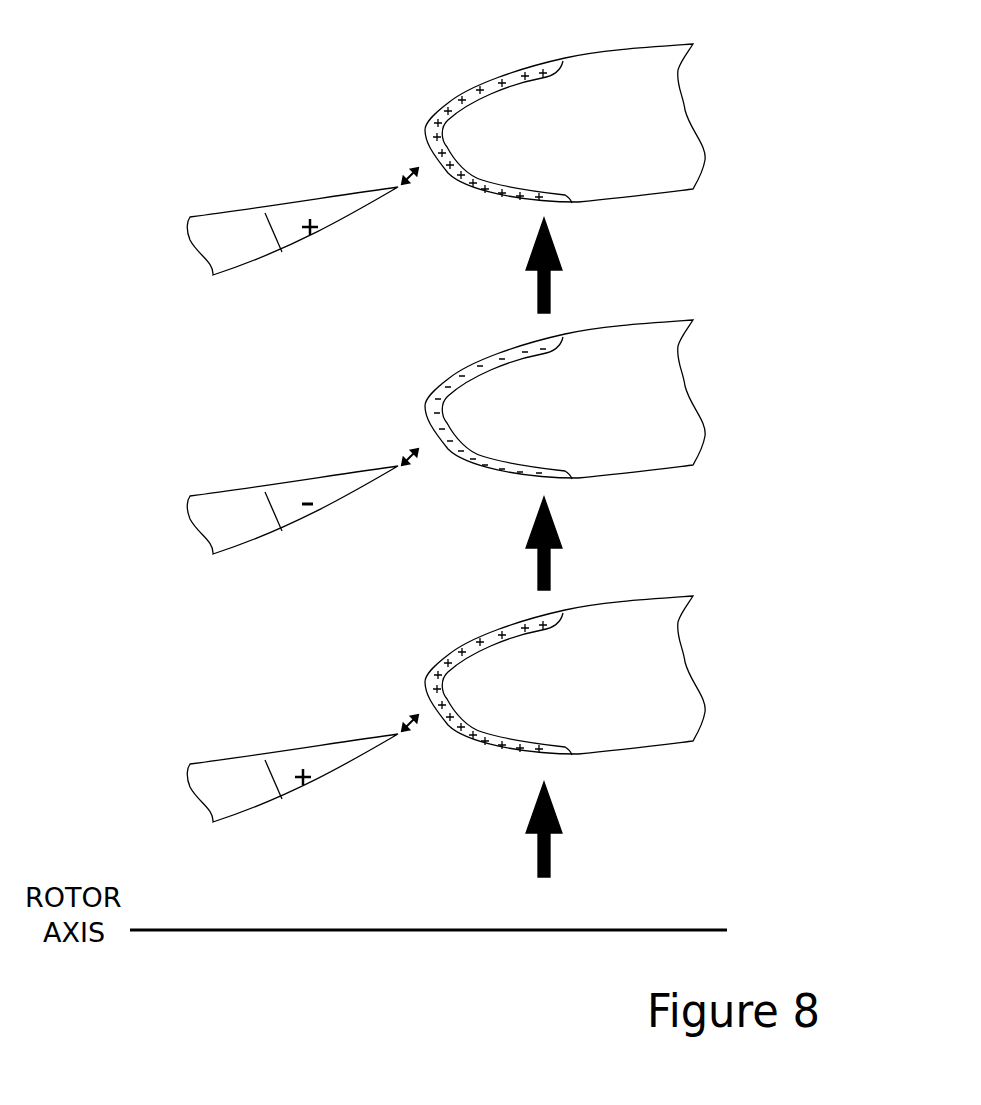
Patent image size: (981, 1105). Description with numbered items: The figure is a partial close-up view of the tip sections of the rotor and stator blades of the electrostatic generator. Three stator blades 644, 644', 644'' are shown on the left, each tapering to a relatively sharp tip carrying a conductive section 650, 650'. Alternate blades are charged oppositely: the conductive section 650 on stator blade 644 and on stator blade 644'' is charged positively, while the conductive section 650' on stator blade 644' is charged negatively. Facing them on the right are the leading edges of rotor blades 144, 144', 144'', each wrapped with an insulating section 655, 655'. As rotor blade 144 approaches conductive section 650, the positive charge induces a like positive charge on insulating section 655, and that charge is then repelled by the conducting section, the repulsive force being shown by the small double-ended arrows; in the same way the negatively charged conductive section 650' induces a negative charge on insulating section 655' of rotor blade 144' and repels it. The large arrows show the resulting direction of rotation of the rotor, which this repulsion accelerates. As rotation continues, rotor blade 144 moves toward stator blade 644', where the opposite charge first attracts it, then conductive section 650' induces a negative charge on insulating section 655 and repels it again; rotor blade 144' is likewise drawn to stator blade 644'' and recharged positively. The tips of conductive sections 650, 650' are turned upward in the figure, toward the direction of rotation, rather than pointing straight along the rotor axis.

The rotor blade 144 is at (581, 709).
The rotor blade 144' is at (585, 430).
The rotor blade 144'' is at (587, 163).
The insulating section 655 is at (487, 389).
The insulating section 655' is at (497, 387).
The stator blade 644 is at (242, 778).
The stator blade 644' is at (239, 510).
The stator blade 644'' is at (240, 207).
The conductive section 650 is at (257, 453).
The conductive section 650' is at (254, 469).